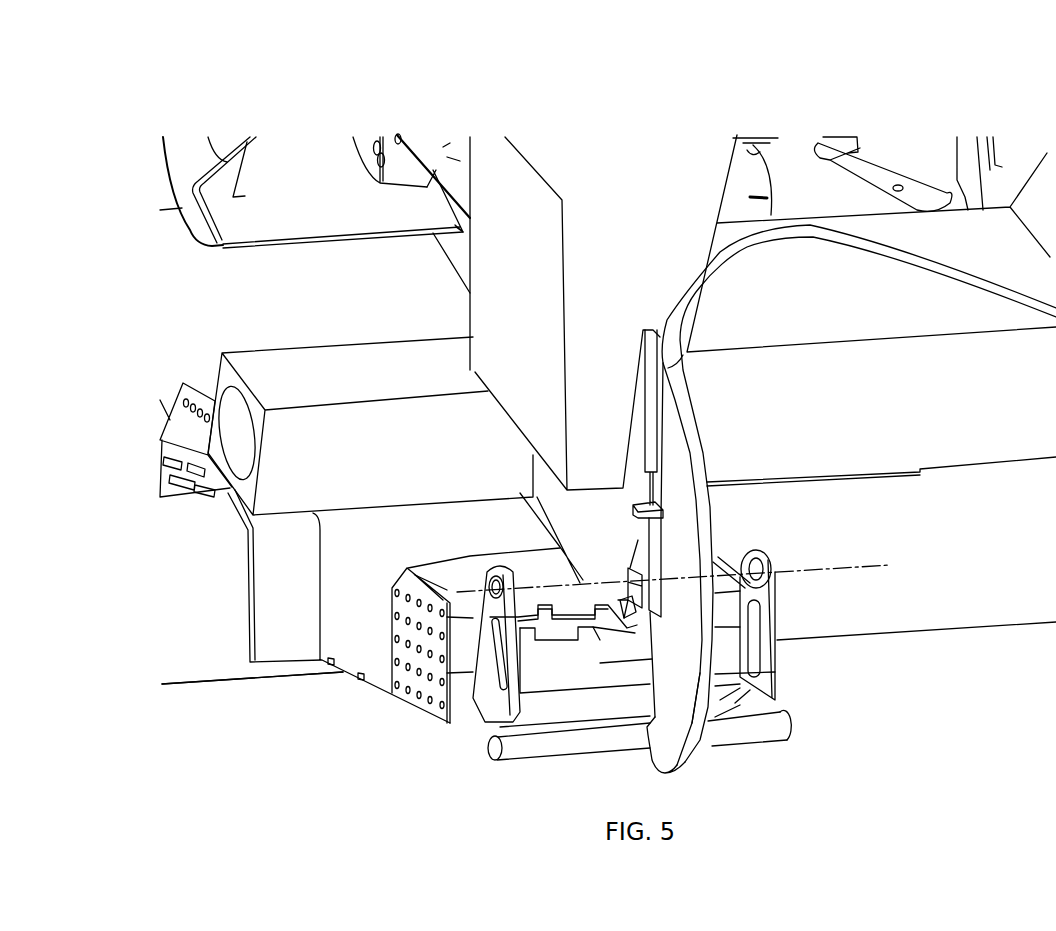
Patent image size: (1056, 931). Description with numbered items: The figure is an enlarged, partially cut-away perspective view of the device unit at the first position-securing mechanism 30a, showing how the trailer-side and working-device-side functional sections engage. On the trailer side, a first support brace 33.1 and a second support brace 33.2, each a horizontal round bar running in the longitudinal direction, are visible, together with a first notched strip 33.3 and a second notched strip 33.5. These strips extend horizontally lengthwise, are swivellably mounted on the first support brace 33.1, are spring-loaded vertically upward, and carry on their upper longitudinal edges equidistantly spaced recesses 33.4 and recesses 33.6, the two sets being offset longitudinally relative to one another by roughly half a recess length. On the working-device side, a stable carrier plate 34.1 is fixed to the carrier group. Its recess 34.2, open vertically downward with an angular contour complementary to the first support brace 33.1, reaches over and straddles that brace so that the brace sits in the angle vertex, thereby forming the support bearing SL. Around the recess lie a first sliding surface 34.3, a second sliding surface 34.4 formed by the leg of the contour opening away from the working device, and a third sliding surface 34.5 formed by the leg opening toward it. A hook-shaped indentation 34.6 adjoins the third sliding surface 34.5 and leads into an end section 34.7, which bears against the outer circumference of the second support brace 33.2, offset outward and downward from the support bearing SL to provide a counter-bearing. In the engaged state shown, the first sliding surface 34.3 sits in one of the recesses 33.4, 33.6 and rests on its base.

The first position-securing mechanism 30a is at (268, 722).
The first support brace 33.1 is at (838, 568).
The second support brace 33.2 is at (768, 722).
The first notched strip 33.3 is at (562, 679).
The recesses 33.4 is at (616, 631).
The second notched strip 33.5 is at (545, 630).
The recesses 33.6 is at (575, 607).
The carrier plate 34.1 is at (706, 545).
The recess 34.2 is at (634, 597).
The first sliding surface 34.3 is at (525, 523).
The second sliding surface 34.4 is at (627, 619).
The third sliding surface 34.5 is at (672, 642).
The hook-shaped indentation 34.6 is at (650, 706).
The end section 34.7 is at (645, 738).
The support bearing SL is at (641, 570).